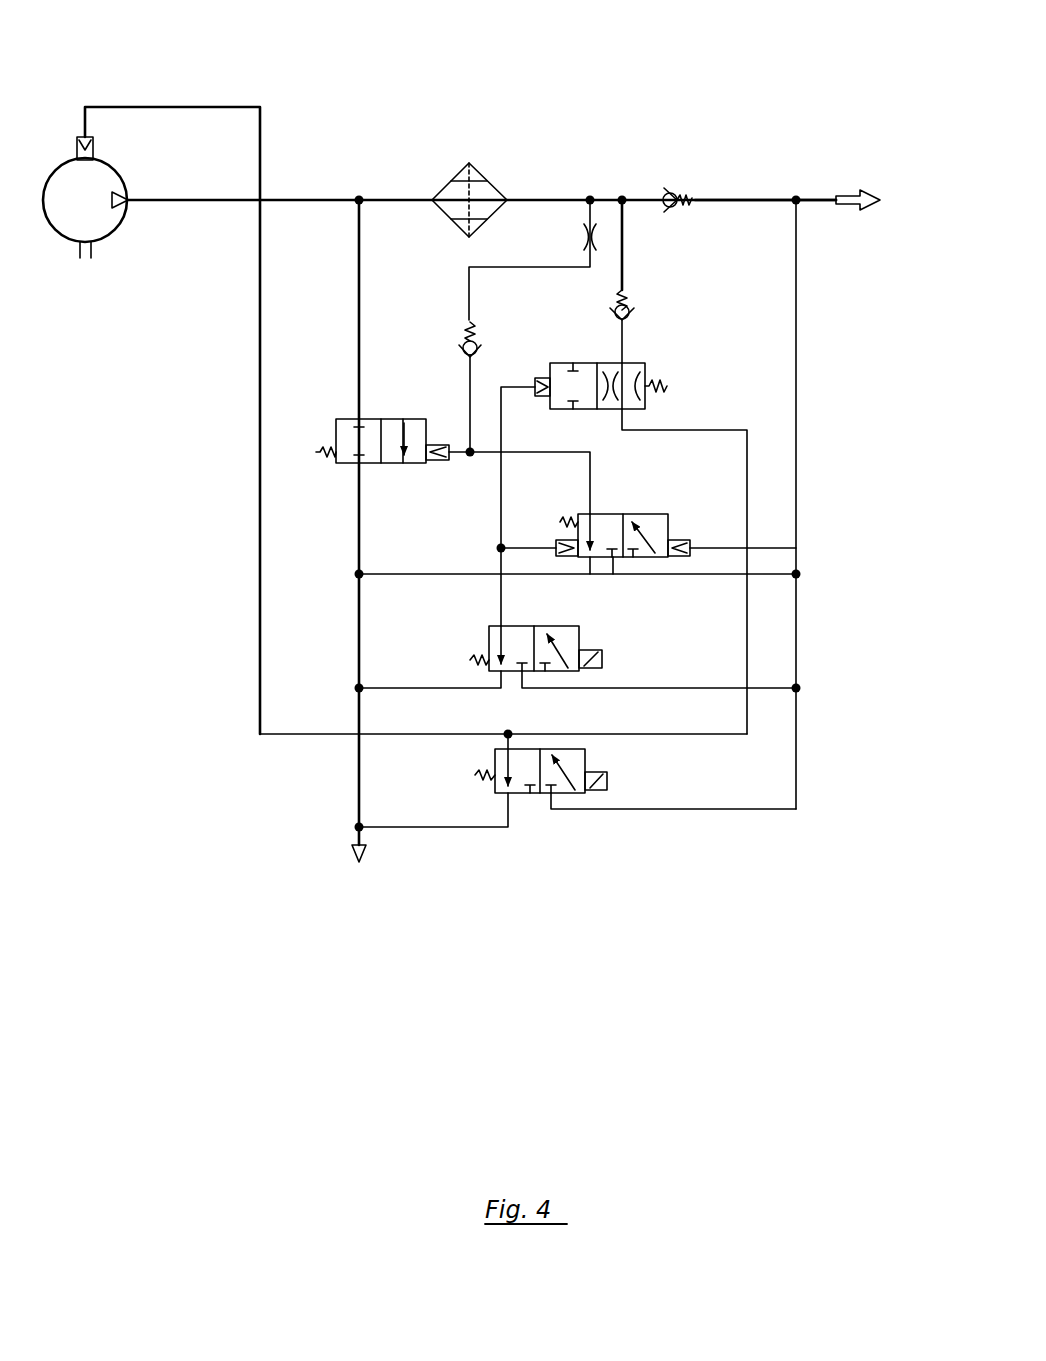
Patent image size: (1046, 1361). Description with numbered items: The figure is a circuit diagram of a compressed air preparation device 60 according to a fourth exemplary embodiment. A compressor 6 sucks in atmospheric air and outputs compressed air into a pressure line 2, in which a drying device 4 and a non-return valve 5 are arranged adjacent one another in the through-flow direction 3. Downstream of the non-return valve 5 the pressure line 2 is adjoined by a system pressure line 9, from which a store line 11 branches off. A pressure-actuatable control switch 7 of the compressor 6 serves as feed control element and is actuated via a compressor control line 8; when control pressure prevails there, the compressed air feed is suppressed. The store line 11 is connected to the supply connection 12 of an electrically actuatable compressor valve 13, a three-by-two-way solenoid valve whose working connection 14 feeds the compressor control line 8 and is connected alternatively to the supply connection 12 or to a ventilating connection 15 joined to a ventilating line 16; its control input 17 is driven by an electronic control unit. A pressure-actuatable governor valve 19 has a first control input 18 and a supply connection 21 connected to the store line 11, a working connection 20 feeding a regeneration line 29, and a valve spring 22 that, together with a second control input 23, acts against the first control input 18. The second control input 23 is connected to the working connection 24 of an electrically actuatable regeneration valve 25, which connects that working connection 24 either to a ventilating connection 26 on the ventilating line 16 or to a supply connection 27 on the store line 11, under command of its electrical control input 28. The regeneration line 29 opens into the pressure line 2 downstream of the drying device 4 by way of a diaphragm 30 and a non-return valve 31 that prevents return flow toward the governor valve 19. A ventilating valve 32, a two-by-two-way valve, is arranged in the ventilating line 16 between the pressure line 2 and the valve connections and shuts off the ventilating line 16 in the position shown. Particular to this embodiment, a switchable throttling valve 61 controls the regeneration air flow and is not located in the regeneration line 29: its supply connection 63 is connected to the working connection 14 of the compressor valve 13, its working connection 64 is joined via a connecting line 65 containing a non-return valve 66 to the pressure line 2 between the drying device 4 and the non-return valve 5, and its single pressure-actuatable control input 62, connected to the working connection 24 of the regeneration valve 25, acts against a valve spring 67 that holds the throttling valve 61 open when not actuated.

The pressure line 2 is at (301, 198).
The through-flow direction 3 is at (847, 194).
The drying device 4 is at (446, 190).
The non-return valve 5 is at (656, 199).
The compressor 6 is at (70, 196).
The control switch 7 is at (84, 134).
The compressor control line 8 is at (160, 106).
The system pressure line 9 is at (746, 198).
The store line 11 is at (800, 522).
The supply connection 12 is at (557, 800).
The compressor valve 13 is at (522, 770).
The working connection 14 is at (497, 742).
The ventilating connection 15 is at (500, 796).
The ventilating line 16 is at (357, 770).
The control input 17 is at (597, 790).
The first control input 18 is at (686, 540).
The governor valve 19 is at (640, 512).
The working connection 20 is at (594, 512).
The supply connection 21 is at (620, 565).
The valve spring 22 is at (565, 518).
The second control input 23 is at (555, 541).
The working connection 24 is at (492, 626).
The regeneration valve 25 is at (580, 628).
The ventilating connection 26 is at (494, 684).
The supply connection 27 is at (528, 680).
The control input 28 is at (604, 656).
The regeneration line 29 is at (468, 308).
The diaphragm 30 is at (572, 236).
The non-return valve 31 is at (462, 343).
The ventilating valve 32 is at (352, 440).
The compressed air preparation device 60 is at (228, 936).
The throttling valve 61 is at (588, 358).
The control input 62 is at (532, 388).
The supply connection 63 is at (630, 414).
The working connection 64 is at (630, 360).
The connecting line 65 is at (630, 338).
The non-return valve 66 is at (630, 308).
The valve spring 67 is at (672, 386).